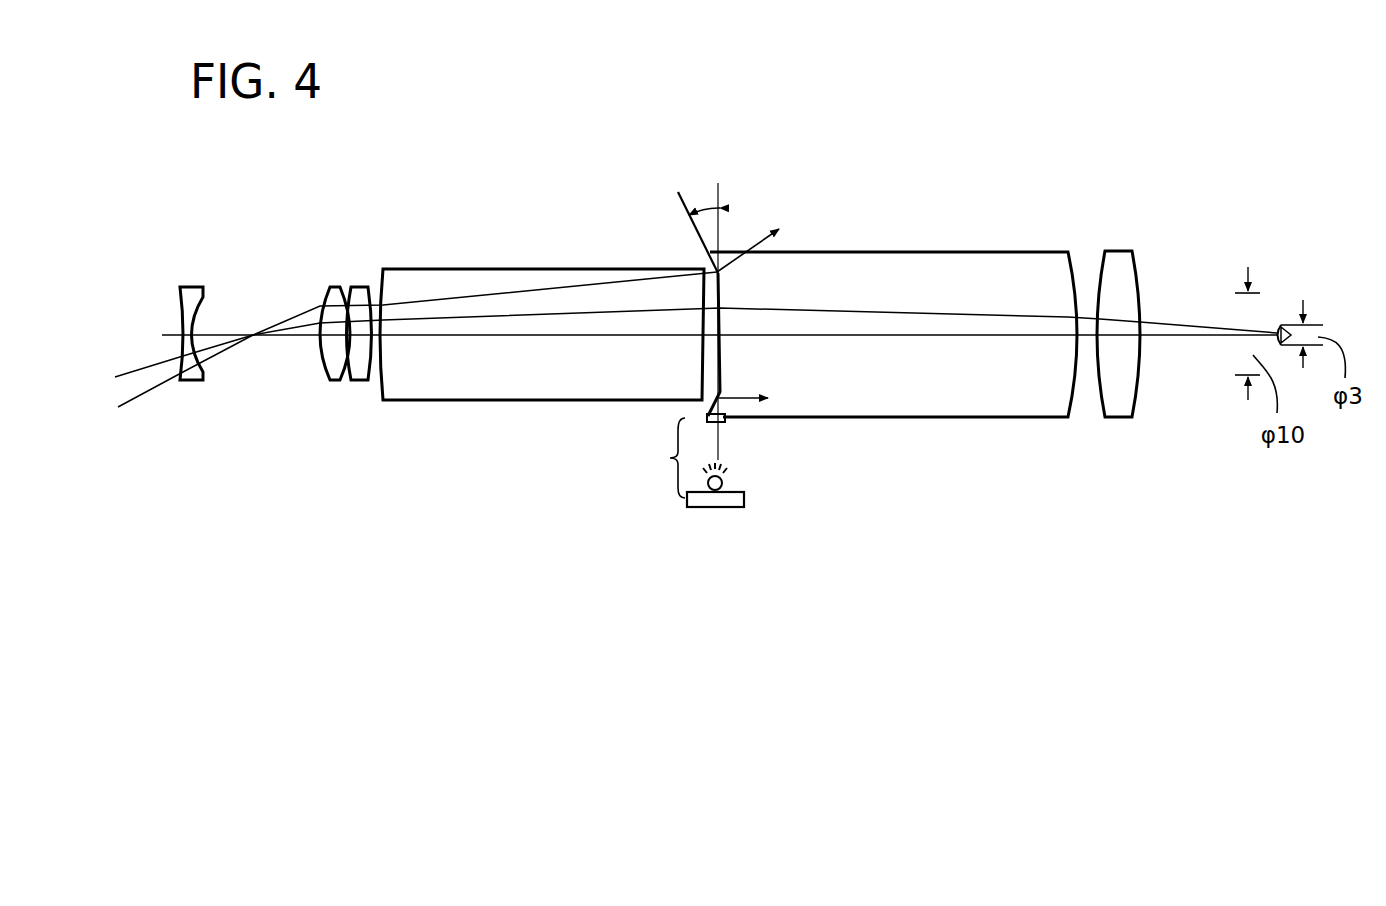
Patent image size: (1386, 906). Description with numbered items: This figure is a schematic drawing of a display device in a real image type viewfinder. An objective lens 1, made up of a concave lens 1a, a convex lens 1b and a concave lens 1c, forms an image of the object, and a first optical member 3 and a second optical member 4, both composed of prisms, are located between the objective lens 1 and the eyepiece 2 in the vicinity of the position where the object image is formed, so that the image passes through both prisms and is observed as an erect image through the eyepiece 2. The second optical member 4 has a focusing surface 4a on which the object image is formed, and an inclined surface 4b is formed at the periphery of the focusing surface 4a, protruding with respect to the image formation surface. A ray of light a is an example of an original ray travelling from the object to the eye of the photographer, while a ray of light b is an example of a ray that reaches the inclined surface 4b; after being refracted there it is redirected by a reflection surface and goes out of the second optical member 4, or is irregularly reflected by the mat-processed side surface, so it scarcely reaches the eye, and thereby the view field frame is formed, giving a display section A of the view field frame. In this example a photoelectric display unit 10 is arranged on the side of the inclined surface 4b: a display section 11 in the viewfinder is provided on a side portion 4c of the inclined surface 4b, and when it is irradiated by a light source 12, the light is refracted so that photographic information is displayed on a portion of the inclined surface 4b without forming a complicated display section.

The objective lens 1 is at (280, 334).
The concave lens 1a is at (194, 283).
The convex lens 1b is at (336, 283).
The concave lens 1c is at (365, 283).
The eyepiece 2 is at (1118, 253).
The first optical member 3 is at (526, 281).
The second optical member 4 is at (844, 258).
The focusing surface 4a is at (721, 355).
The inclined surface 4b is at (713, 268).
The side portion 4c is at (740, 421).
The photoelectric display unit 10 is at (689, 490).
The display section in the viewfinder 11 is at (724, 421).
The light source 12 is at (688, 508).
The ray of light a is at (138, 364).
The ray of light b is at (145, 393).
The display section of the view field frame A is at (743, 224).